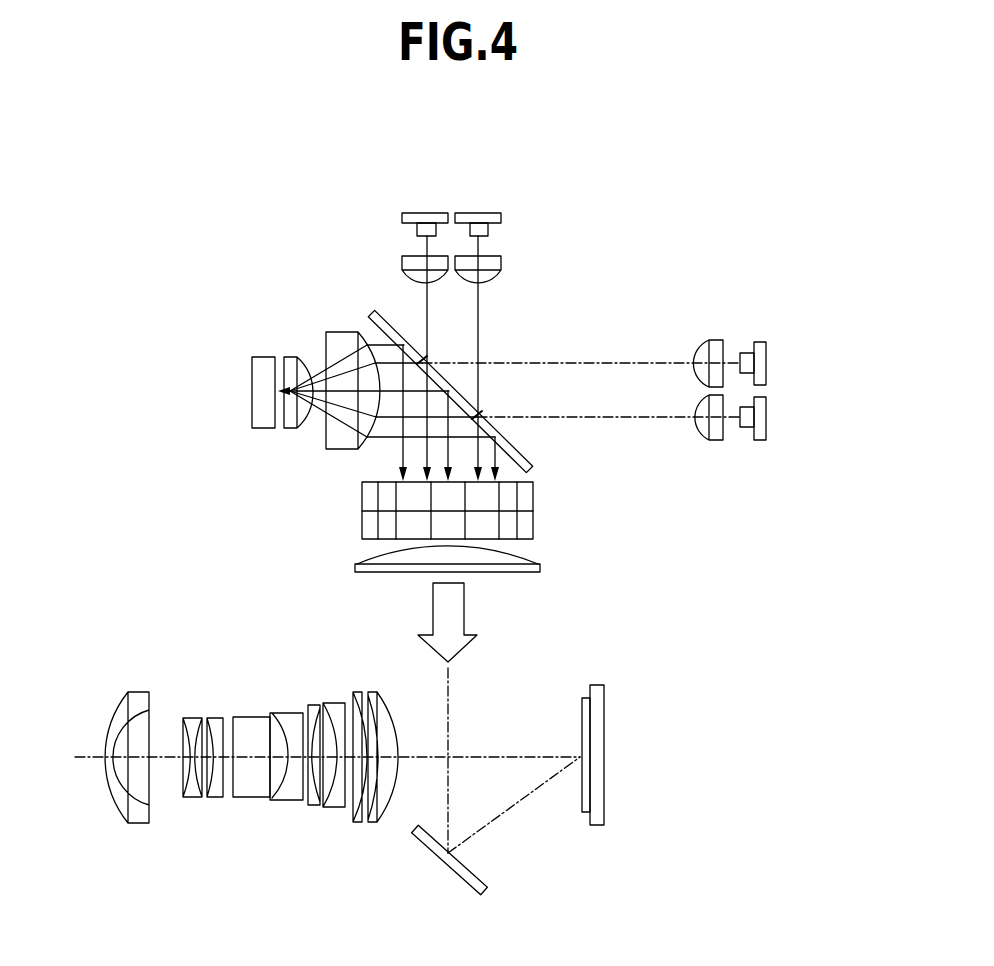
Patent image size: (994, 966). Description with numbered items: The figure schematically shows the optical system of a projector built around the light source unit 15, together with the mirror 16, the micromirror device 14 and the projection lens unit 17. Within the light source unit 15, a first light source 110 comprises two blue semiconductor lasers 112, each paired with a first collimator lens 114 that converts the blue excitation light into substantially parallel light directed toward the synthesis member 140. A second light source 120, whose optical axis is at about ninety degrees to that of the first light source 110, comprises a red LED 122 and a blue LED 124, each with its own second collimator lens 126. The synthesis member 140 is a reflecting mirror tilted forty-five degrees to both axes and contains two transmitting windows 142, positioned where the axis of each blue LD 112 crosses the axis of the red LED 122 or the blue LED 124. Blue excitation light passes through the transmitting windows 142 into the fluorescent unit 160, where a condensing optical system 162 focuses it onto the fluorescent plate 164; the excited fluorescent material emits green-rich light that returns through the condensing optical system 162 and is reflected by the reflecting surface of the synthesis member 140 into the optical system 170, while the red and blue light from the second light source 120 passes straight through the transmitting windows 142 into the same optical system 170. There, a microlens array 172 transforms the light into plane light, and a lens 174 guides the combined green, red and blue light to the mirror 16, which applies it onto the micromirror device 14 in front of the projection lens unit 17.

The light source unit 15 is at (148, 263).
The second light source 120 is at (337, 180).
The red light emitting diode 122 is at (422, 213).
The blue light emitting diode 124 is at (477, 213).
The second collimator lens 126 is at (403, 263).
The synthesis member 140 is at (517, 447).
The transmitting window 142 is at (422, 362).
The first light source 110 is at (775, 297).
The blue semiconductor laser 112 is at (767, 362).
The first collimator lens 114 is at (712, 340).
The fluorescent unit 160 is at (176, 430).
The condensing optical system 162 is at (390, 453).
The fluorescent plate 164 is at (260, 413).
The optical system 170 is at (637, 530).
The microlens array 172 is at (537, 523).
The lens 174 is at (540, 568).
The projection lens unit 17 is at (403, 832).
The mirror 16 is at (473, 892).
The micromirror device 14 is at (597, 825).